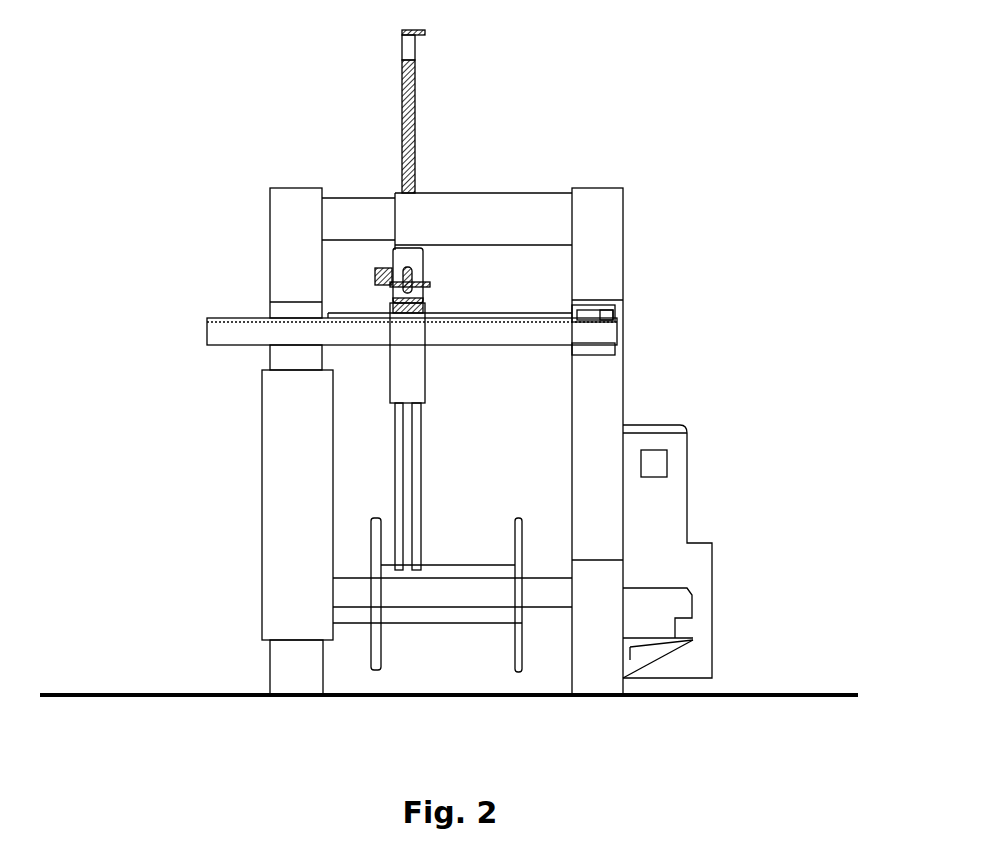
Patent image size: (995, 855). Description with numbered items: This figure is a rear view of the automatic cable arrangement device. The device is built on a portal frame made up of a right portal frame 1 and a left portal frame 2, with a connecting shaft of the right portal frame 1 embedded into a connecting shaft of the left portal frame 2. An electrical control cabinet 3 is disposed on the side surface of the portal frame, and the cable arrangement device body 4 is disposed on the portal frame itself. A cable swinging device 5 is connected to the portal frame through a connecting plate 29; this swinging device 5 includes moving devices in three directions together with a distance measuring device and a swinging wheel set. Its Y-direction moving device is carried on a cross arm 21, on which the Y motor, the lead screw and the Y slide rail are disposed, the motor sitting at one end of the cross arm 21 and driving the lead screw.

The right portal frame 1 is at (346, 441).
The left portal frame 2 is at (679, 441).
The connecting plate 29 is at (667, 244).
The cross arm 21 is at (412, 213).
The cable swinging device 5 is at (334, 299).
The cable arrangement device body 4 is at (352, 595).
The electrical control cabinet 3 is at (739, 520).